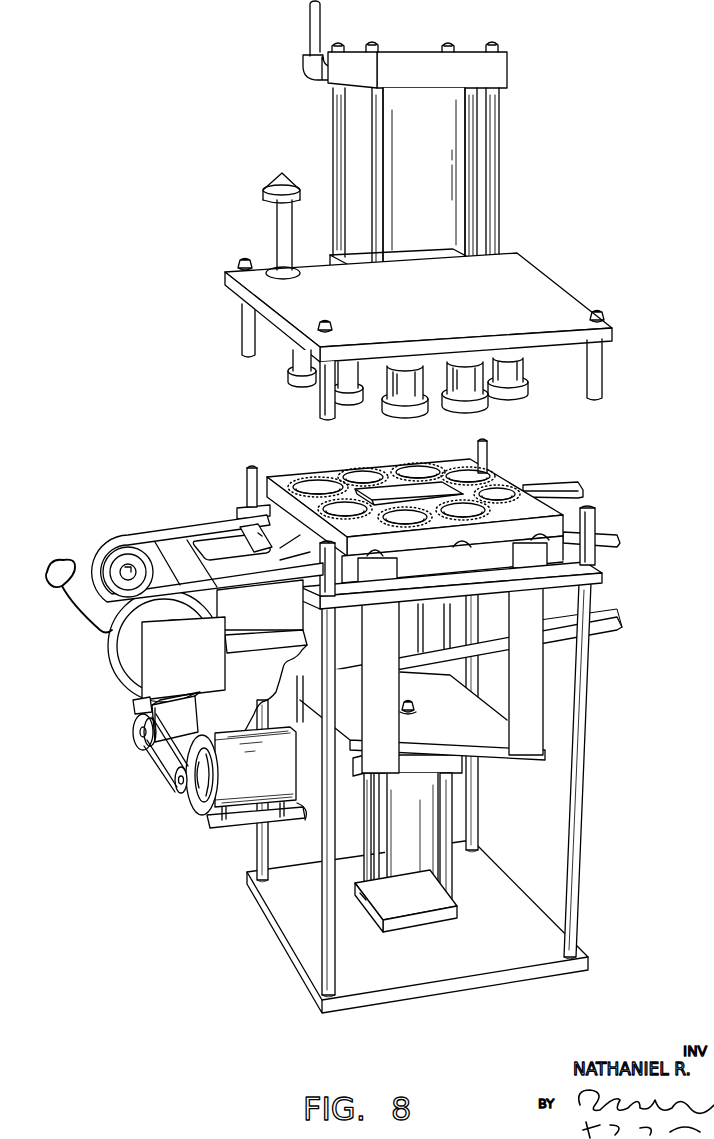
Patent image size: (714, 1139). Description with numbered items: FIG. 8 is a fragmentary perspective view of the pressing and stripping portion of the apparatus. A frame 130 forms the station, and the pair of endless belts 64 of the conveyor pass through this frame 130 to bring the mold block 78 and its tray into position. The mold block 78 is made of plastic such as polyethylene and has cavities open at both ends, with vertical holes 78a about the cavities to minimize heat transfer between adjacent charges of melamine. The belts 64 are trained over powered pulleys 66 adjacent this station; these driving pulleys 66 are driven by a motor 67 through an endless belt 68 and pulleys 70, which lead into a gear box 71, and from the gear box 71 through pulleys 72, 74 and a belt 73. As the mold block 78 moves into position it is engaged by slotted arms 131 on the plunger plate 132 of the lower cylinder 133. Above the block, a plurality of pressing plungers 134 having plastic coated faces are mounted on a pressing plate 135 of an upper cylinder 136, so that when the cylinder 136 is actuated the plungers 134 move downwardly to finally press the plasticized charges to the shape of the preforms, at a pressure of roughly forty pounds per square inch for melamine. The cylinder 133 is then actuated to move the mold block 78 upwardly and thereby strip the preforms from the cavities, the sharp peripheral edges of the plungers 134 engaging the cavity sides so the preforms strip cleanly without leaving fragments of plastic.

The cylinder 136 is at (490, 160).
The pressing plate 135 is at (553, 352).
The pressing plungers 134 is at (528, 388).
The mold block 78 is at (502, 478).
The vertical holes 78a is at (308, 480).
The endless belts 64 is at (568, 490).
The frame 130 is at (620, 572).
The slotted arms 131 is at (535, 555).
The plunger plate 132 is at (487, 717).
The cylinder 133 is at (413, 815).
The pulley 74 is at (93, 546).
The powered pulleys 66 is at (53, 588).
The belt 73 is at (120, 670).
The pulley 72 is at (177, 690).
The gear box 71 is at (138, 703).
The pulleys 70 is at (140, 732).
The endless belt 68 is at (167, 770).
The motor 67 is at (275, 777).